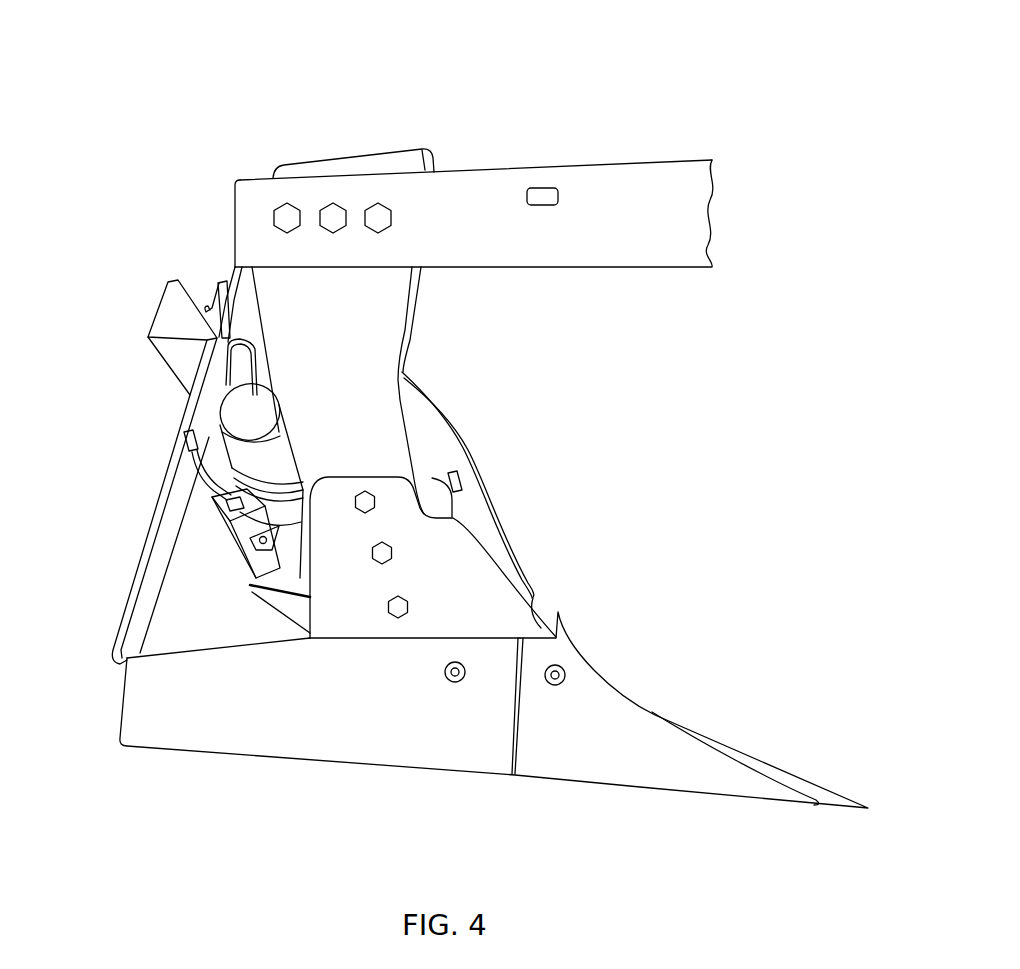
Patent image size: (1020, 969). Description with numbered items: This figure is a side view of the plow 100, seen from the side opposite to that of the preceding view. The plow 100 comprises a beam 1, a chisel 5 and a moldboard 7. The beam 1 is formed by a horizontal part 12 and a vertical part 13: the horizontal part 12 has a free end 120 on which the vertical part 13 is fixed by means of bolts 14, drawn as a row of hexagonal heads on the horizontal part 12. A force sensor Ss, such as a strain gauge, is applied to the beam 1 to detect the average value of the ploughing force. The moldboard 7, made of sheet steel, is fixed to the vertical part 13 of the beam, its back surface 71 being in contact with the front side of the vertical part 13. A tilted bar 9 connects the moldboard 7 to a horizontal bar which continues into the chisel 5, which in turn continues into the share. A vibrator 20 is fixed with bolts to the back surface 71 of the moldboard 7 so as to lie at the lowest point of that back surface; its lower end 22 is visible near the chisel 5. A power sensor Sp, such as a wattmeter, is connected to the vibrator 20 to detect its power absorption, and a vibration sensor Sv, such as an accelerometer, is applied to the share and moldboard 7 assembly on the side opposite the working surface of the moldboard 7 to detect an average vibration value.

The plow 100 is at (183, 157).
The beam 1 is at (467, 157).
The horizontal part 12 is at (598, 210).
The free end 120 is at (250, 193).
The bolts 14 is at (287, 215).
The force sensor Ss is at (543, 188).
The vertical part 13 is at (428, 312).
The moldboard 7 is at (504, 512).
The back surface 71 is at (435, 446).
The vibration sensor Sv is at (459, 478).
The vibrator 20 is at (243, 410).
The power sensor Sp is at (185, 434).
The tilted bar 9 is at (120, 565).
The lower end 22 is at (290, 548).
The chisel 5 is at (463, 741).